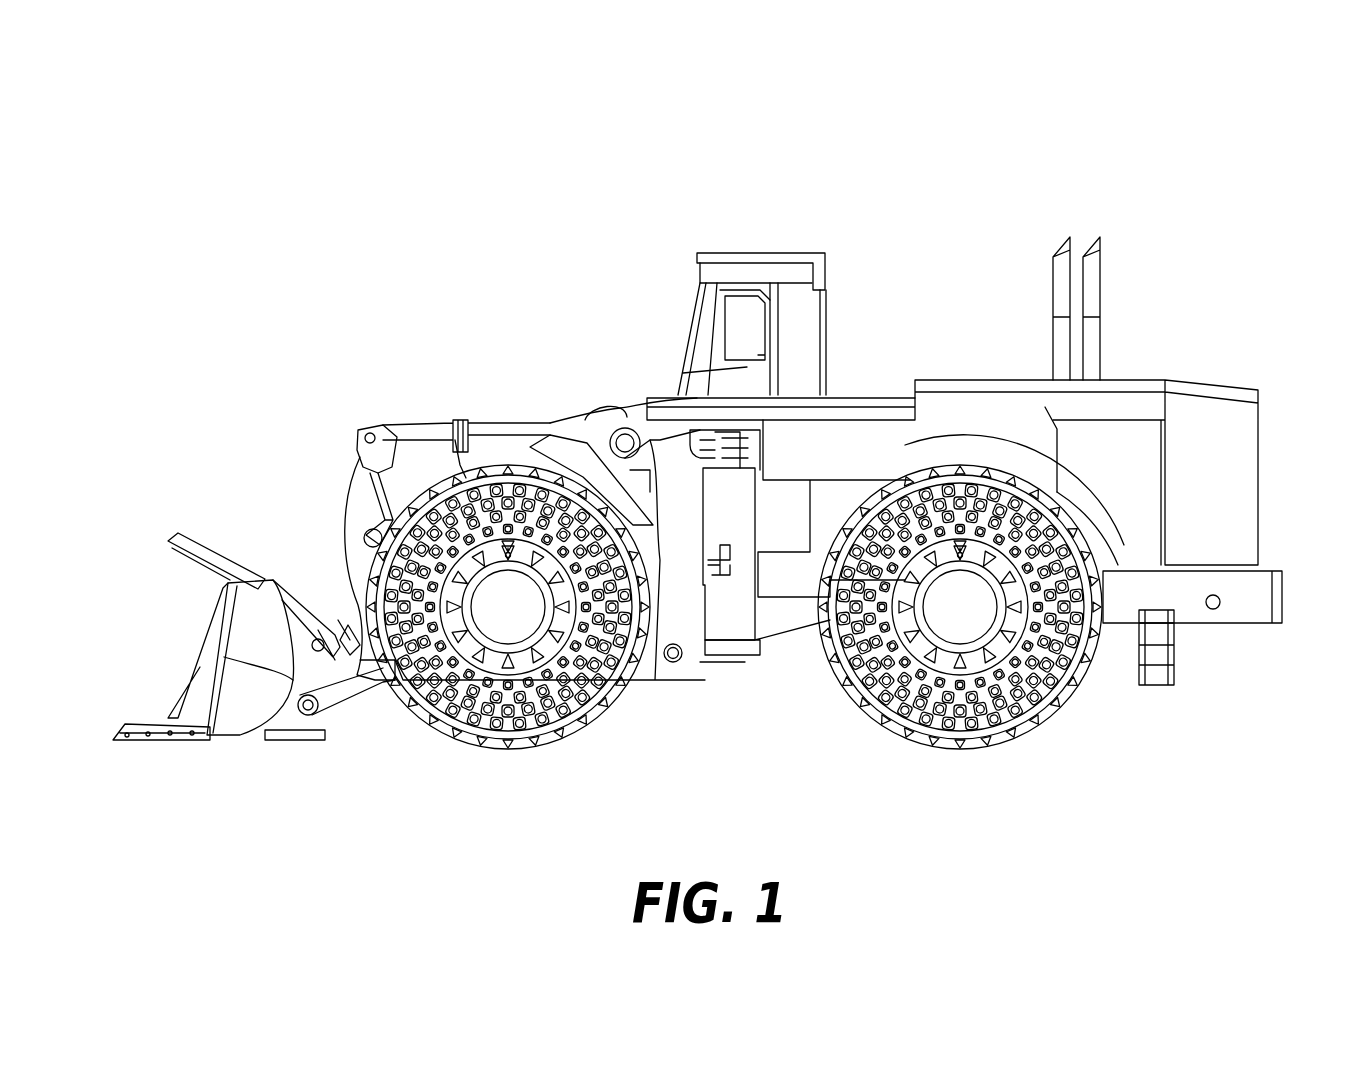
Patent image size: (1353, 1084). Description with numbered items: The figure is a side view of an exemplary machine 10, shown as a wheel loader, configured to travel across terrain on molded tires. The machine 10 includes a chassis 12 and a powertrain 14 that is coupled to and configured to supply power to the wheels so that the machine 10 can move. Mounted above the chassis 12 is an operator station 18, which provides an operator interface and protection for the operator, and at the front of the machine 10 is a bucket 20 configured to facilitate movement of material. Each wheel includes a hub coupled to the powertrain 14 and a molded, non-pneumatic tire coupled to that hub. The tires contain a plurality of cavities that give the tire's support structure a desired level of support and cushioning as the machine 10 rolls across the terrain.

The machine 10 is at (1125, 188).
The chassis 12 is at (727, 517).
The powertrain 14 is at (1115, 408).
The operator station 18 is at (798, 258).
The bucket 20 is at (178, 540).